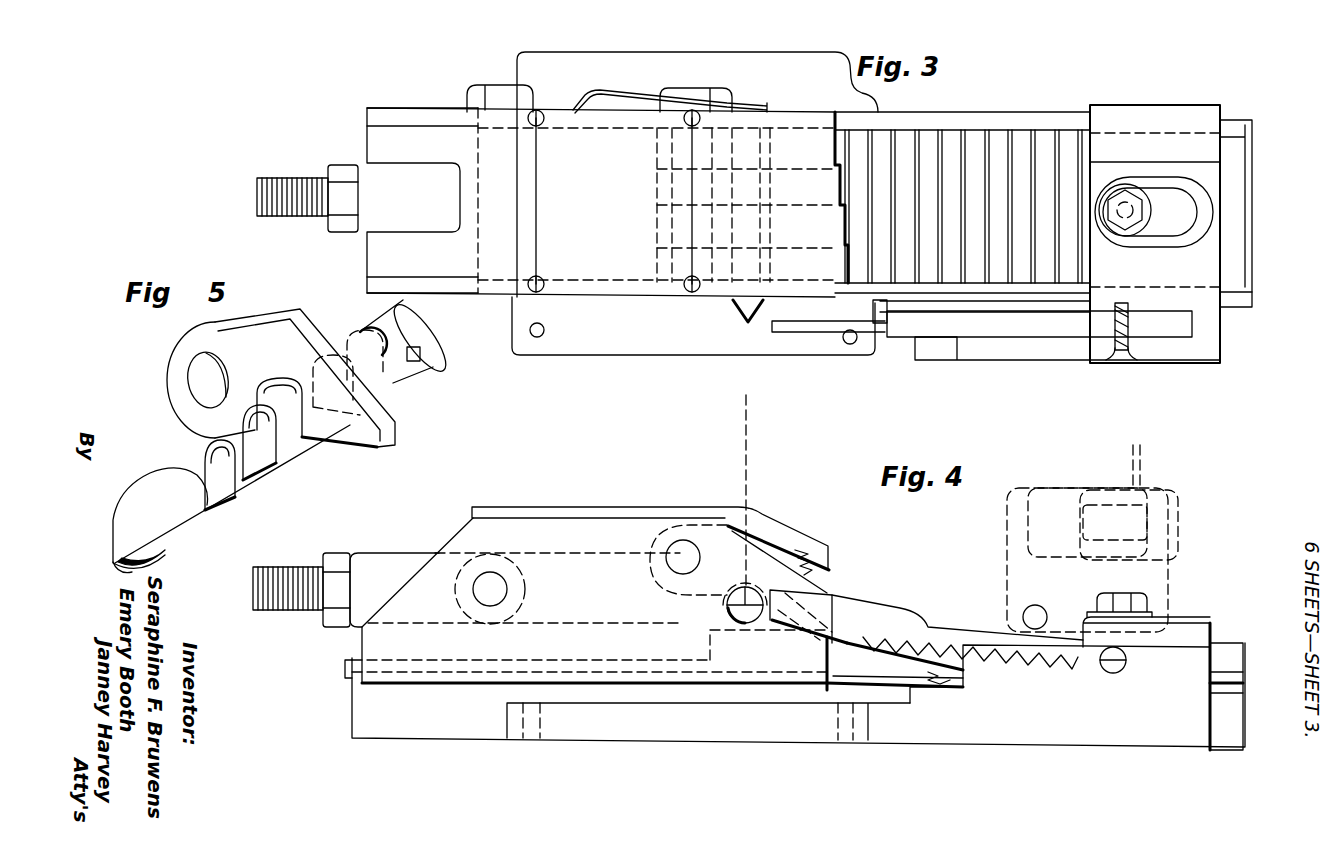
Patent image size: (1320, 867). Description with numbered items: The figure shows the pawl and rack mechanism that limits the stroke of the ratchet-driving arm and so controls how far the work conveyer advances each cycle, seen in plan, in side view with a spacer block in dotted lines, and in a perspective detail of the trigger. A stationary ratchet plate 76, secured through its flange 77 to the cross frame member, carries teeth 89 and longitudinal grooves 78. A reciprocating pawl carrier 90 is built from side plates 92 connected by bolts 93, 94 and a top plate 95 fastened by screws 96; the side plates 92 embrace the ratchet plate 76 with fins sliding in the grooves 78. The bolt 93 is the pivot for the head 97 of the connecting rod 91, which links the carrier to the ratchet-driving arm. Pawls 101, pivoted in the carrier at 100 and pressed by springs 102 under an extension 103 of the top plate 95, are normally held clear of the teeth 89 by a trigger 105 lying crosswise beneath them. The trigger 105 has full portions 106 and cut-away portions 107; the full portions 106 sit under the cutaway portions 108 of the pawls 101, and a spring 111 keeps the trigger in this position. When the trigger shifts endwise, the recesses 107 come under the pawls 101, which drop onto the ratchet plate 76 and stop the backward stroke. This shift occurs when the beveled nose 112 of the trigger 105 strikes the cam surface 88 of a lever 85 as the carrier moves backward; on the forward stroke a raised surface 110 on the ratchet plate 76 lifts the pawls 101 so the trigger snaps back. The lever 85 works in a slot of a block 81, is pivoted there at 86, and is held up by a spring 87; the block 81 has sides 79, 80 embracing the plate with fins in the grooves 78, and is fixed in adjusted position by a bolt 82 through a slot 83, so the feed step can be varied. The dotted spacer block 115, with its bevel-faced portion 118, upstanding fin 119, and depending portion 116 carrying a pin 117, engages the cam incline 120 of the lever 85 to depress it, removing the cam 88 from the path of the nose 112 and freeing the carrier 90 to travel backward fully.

In FIG. 3, the ratchet plate 76 is at (1240, 222).
In FIG. 4, the ratchet plate 76 is at (388, 722).
In FIG. 3, the flange 77 is at (813, 60).
In FIG. 4, the flange 77 is at (635, 723).
In FIG. 4, the longitudinal grooves 78 is at (880, 683).
In FIG. 3, the side of block 79 is at (1001, 362).
In FIG. 4, the side of block 79 is at (1052, 737).
In FIG. 3, the side of block 80 is at (1192, 110).
In FIG. 3, the block 81 is at (1193, 162).
In FIG. 4, the block 81 is at (1163, 633).
In FIG. 3, the bolt 82 is at (1129, 205).
In FIG. 3, the slot 83 is at (1176, 214).
In FIG. 3, the lever 85 is at (1020, 315).
In FIG. 4, the lever 85 is at (863, 622).
In FIG. 3, the pivot 86 is at (1119, 352).
In FIG. 4, the pivot 86 is at (1113, 672).
In FIG. 4, the spring 87 is at (948, 673).
In FIG. 3, the cam surface 88 is at (882, 322).
In FIG. 3, the teeth 89 is at (976, 160).
In FIG. 3, the pawl carrier 90 is at (591, 317).
In FIG. 3, the rod 91 is at (292, 178).
In FIG. 4, the rod 91 is at (296, 570).
In FIG. 3, the side plates 92 is at (614, 116).
In FIG. 4, the side plates 92 is at (533, 545).
In FIG. 3, the bolt 93 is at (497, 92).
In FIG. 4, the bolt 93 is at (486, 588).
In FIG. 3, the bolt 94 is at (696, 88).
In FIG. 3, the top plate 95 is at (572, 128).
In FIG. 4, the top plate 95 is at (626, 508).
In FIG. 3, the screws 96 is at (540, 115).
In FIG. 3, the head of connecting rod 97 is at (400, 185).
In FIG. 4, the head of connecting rod 97 is at (390, 567).
In FIG. 4, the pawl pivot 100 is at (682, 555).
In FIG. 3, the pawls 101 is at (849, 258).
In FIG. 4, the pawls 101 is at (762, 560).
In FIG. 5, the pawls 101 is at (297, 347).
In FIG. 4, the springs 102 is at (808, 557).
In FIG. 4, the extension 103 is at (795, 532).
In FIG. 3, the trigger 105 is at (768, 136).
In FIG. 4, the trigger 105 is at (733, 588).
In FIG. 5, the trigger 105 is at (152, 507).
In FIG. 5, the full portions 106 is at (237, 420).
In FIG. 5, the cut-away portions 107 is at (247, 392).
In FIG. 5, the cutaway portions of pawls 108 is at (363, 463).
In FIG. 4, the raised surface 110 is at (745, 648).
In FIG. 3, the spring 111 is at (746, 106).
In FIG. 3, the beveled nose 112 is at (748, 322).
In FIG. 4, the beveled nose 112 is at (725, 608).
In FIG. 5, the beveled nose 112 is at (115, 563).
In FIG. 4, the spacer block 115 is at (1153, 505).
In FIG. 4, the depending portion 116 is at (1012, 557).
In FIG. 4, the pin 117 is at (1046, 615).
In FIG. 4, the bevel-faced portion 118 is at (1113, 495).
In FIG. 4, the upstanding fin 119 is at (1140, 463).
In FIG. 4, the cam incline 120 is at (929, 622).